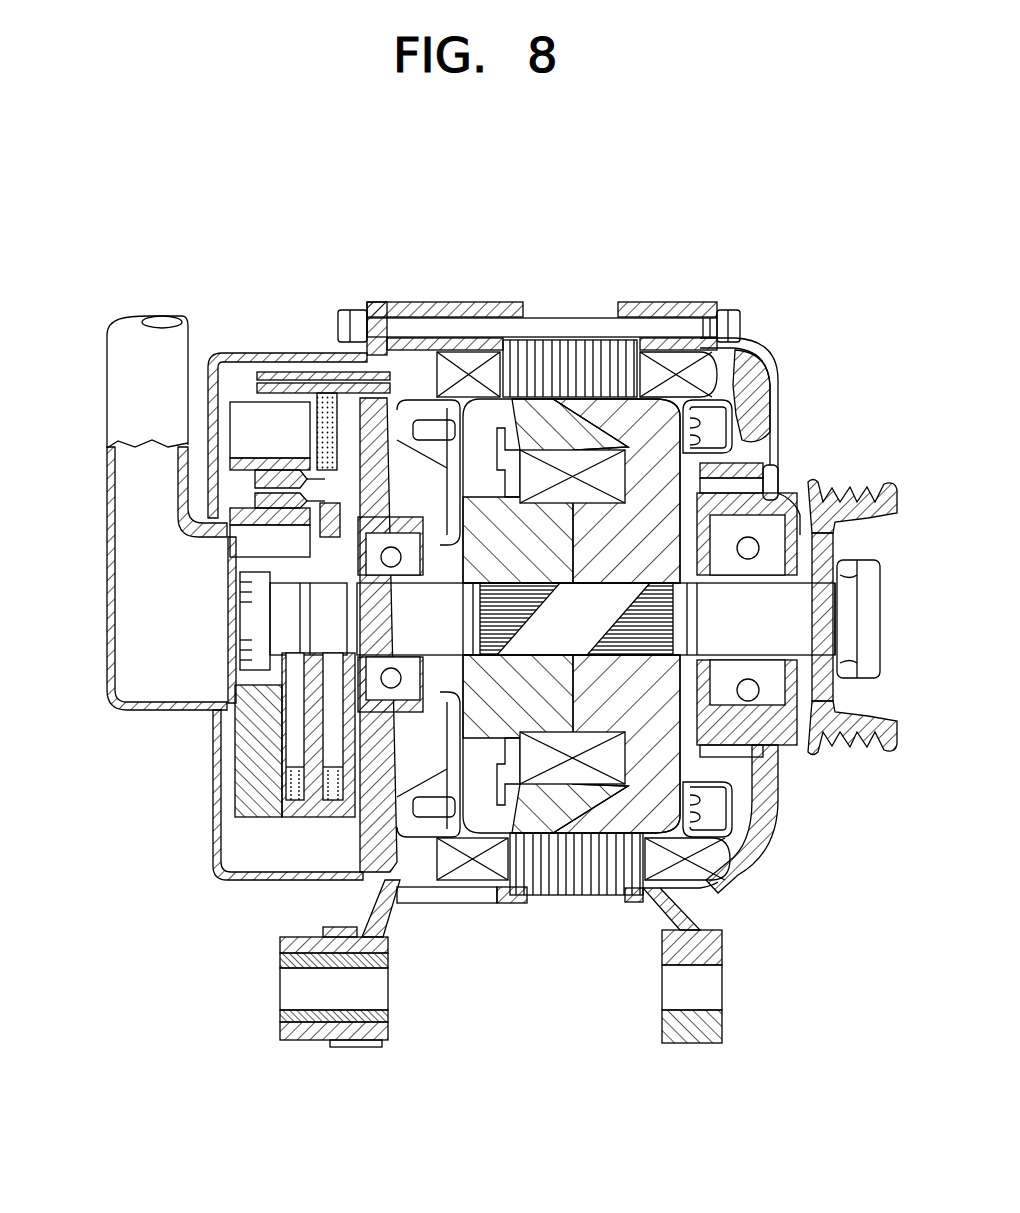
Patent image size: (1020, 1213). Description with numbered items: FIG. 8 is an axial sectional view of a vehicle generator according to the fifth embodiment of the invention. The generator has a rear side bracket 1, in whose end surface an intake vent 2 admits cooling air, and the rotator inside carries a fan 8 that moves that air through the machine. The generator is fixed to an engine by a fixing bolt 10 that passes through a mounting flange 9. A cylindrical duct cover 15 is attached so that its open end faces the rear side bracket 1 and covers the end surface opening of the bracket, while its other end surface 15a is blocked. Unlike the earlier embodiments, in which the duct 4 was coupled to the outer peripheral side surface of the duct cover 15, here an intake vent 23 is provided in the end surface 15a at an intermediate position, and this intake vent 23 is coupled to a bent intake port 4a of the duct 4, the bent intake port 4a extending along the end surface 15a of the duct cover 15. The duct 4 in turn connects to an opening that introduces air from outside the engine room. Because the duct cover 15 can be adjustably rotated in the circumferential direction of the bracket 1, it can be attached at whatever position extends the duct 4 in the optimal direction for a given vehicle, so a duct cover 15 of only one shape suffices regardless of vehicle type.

The rear side bracket 1 is at (393, 903).
The intake vent 2 is at (660, 908).
The duct 4 is at (118, 403).
The bent intake port 4a is at (172, 722).
The fan 8 is at (348, 316).
The mounting flange 9 is at (740, 325).
The fixing bolt 10 is at (369, 305).
The duct cover 15 is at (212, 858).
The end surface 15a is at (213, 813).
The intake vent 23 is at (212, 625).